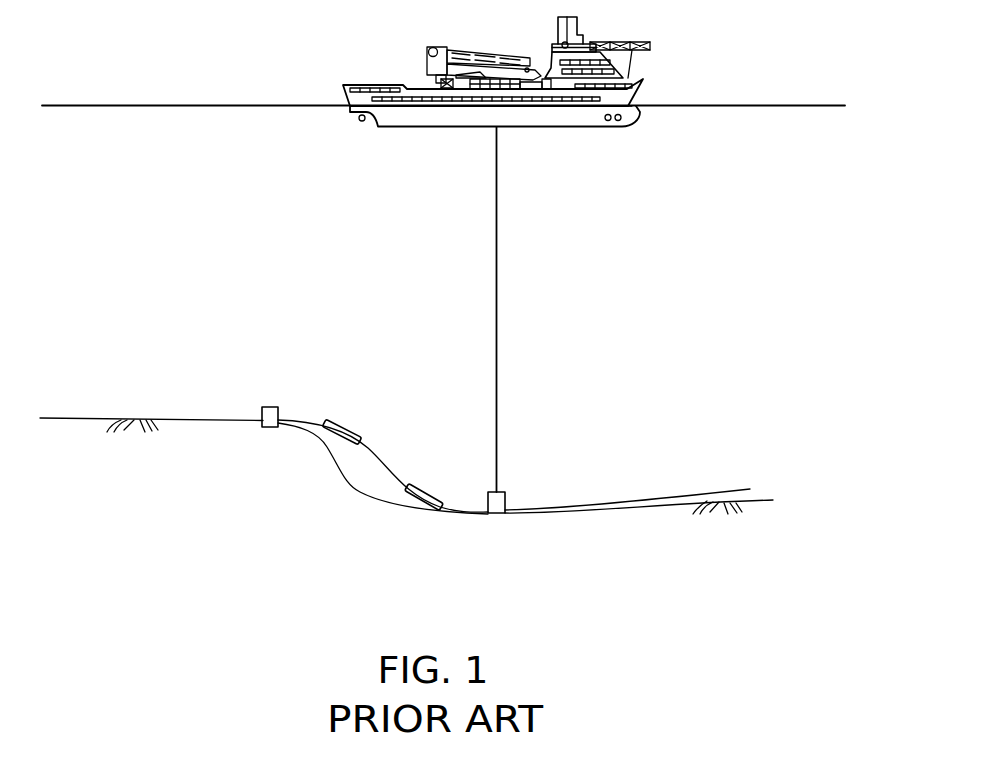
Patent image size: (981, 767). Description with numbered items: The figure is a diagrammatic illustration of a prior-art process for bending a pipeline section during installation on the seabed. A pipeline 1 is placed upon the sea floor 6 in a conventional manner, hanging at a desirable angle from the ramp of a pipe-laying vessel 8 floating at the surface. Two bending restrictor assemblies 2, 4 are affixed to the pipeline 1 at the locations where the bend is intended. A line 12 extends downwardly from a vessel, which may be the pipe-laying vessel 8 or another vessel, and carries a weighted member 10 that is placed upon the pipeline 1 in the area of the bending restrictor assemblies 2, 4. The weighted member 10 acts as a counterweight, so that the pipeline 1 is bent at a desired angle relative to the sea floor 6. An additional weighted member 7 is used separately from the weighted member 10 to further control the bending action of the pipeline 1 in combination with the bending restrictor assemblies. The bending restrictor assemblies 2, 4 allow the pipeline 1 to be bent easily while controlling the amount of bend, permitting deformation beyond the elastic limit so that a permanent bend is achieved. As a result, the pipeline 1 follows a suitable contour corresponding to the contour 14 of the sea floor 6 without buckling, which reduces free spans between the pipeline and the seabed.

The pipeline 1 is at (613, 506).
The bending restrictor assembly 2 is at (343, 425).
The bending restrictor assembly 4 is at (423, 488).
The sea floor 6 is at (205, 422).
The weighted member 7 is at (265, 407).
The pipe-laying vessel 8 is at (638, 80).
The weighted member 10 is at (505, 493).
The line 12 is at (497, 315).
The contour of the seafloor 14 is at (345, 463).